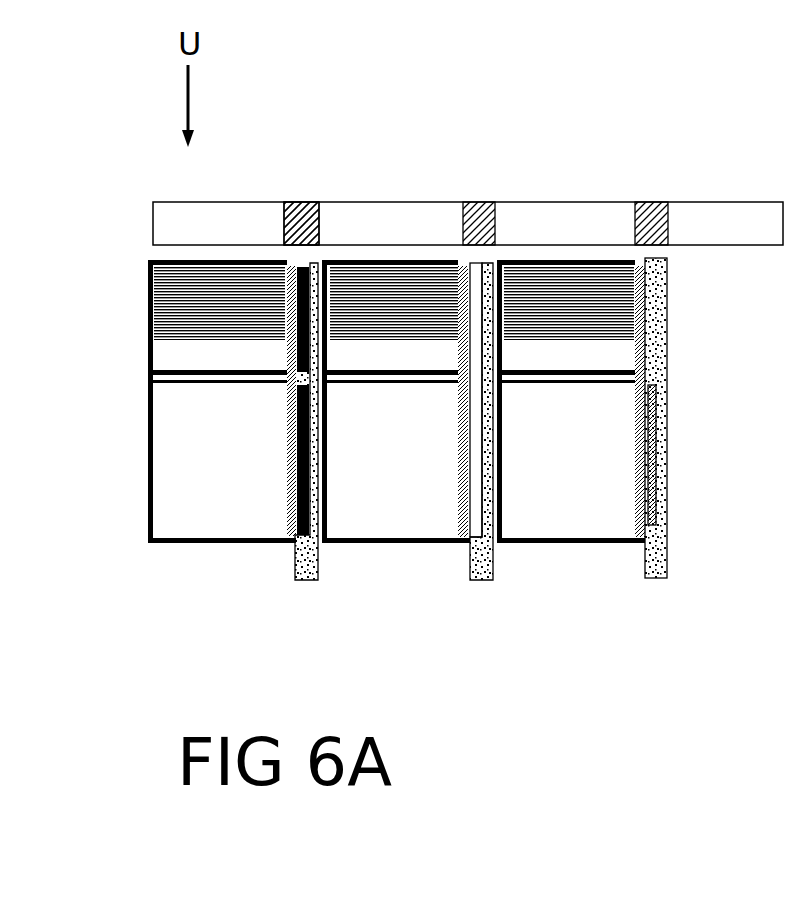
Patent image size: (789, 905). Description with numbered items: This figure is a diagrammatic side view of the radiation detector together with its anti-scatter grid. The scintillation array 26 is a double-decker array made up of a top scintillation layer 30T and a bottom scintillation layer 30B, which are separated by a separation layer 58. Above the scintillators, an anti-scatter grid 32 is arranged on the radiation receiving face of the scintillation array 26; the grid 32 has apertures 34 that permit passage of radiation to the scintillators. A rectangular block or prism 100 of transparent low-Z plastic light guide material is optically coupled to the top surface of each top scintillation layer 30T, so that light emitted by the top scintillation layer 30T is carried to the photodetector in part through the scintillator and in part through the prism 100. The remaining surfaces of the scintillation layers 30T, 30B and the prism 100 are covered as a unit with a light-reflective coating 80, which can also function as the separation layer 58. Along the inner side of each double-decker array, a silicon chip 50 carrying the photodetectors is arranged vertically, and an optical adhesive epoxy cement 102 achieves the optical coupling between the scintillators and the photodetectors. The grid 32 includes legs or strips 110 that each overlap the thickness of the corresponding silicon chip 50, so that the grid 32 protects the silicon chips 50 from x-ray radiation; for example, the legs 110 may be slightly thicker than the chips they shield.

The scintillation array 26 is at (150, 573).
The top scintillation layer 30T is at (150, 348).
The bottom scintillation layer 30B is at (200, 541).
The anti-scatter grid 32 is at (703, 202).
The apertures 34 is at (575, 202).
The silicon chip 50 is at (668, 278).
The separation layer 58 is at (150, 378).
The light-reflective coating 80 is at (148, 440).
The prism 100 is at (150, 287).
The optical adhesive epoxy cement 102 is at (287, 545).
The legs 110 is at (307, 203).